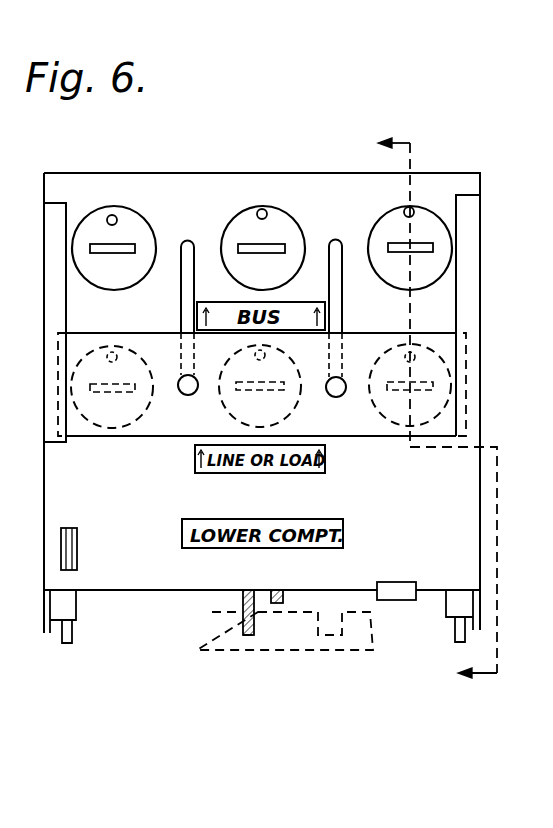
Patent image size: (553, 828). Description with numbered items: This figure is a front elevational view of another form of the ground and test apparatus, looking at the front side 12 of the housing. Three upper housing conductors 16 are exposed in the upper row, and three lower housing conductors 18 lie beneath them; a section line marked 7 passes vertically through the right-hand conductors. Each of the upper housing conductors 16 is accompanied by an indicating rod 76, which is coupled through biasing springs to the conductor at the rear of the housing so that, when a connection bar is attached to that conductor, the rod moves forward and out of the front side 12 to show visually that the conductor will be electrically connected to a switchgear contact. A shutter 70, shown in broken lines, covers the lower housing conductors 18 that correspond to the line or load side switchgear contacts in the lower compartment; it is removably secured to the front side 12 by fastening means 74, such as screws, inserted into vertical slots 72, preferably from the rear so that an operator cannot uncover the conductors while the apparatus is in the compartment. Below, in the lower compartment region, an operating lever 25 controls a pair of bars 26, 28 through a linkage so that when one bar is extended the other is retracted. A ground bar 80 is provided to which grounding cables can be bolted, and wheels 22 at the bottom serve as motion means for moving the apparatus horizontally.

The front side 12 is at (190, 172).
The upper housing conductor 16 is at (394, 242).
The indicating rod 76 is at (257, 210).
The vertical slot 72 is at (342, 293).
The fastening means 74 is at (336, 397).
The lower housing conductor 18 is at (262, 392).
The shutter 70 is at (370, 427).
The operating lever 25 is at (77, 574).
The bar 26 is at (243, 596).
The bar 28 is at (277, 590).
The ground bar 80 is at (399, 565).
The wheels 22 is at (72, 638).
The section line 7- 7 is at (423, 412).